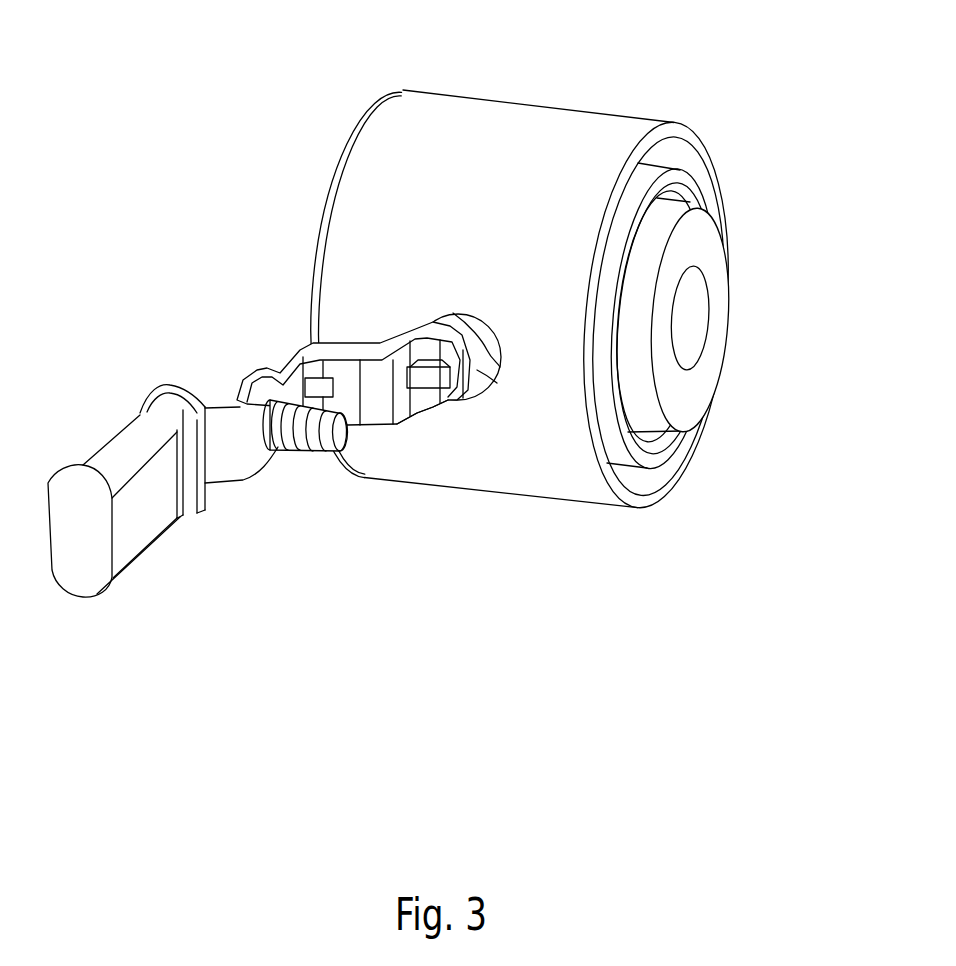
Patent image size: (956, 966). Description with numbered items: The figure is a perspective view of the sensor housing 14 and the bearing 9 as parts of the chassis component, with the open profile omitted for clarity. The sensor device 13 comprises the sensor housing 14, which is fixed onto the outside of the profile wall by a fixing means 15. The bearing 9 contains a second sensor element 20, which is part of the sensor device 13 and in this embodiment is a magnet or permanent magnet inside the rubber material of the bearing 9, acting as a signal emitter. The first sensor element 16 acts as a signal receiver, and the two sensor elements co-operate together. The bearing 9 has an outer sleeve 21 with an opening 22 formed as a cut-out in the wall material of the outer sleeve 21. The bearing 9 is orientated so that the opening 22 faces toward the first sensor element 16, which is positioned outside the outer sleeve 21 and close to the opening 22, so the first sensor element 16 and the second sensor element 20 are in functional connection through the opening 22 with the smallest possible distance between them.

The bearing 9 is at (753, 143).
The sensor device 13 is at (225, 303).
The sensor housing 14 is at (150, 393).
The fixing means 15 is at (300, 452).
The first sensor element 16 is at (445, 397).
The second sensor element 20 is at (480, 343).
The outer sleeve 21 is at (425, 113).
The opening 22 is at (497, 387).